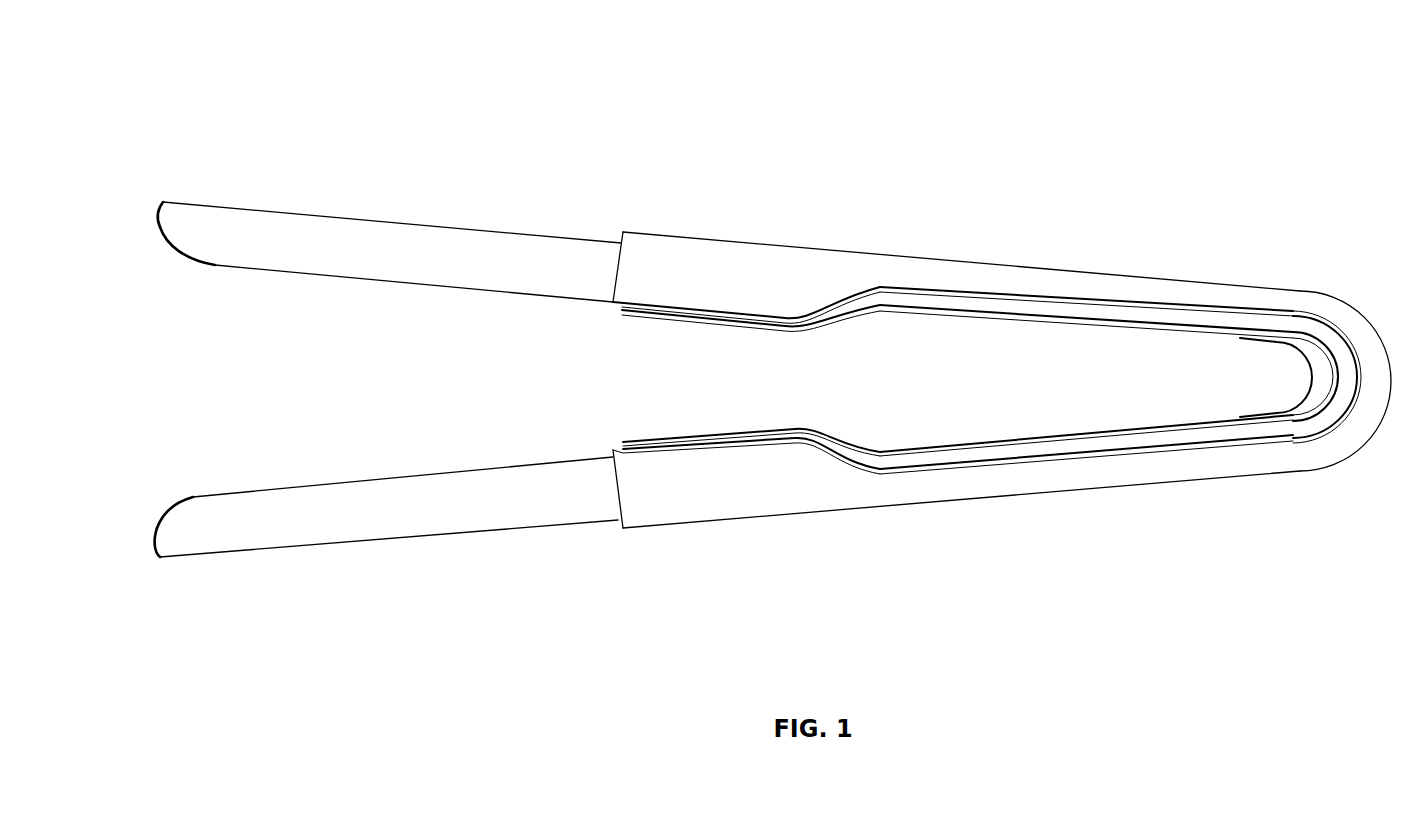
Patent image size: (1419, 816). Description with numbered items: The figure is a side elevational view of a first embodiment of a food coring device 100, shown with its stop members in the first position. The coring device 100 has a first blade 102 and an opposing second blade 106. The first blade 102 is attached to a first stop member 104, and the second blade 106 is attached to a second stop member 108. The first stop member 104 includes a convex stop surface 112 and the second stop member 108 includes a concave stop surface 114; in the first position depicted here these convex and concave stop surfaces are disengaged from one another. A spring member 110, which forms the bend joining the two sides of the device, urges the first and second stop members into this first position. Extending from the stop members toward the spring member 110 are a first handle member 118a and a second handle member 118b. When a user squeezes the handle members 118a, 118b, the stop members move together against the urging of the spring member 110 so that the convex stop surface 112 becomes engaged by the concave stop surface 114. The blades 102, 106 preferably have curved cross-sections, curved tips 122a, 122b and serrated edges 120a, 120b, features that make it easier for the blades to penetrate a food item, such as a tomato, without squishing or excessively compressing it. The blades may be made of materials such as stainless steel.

The food coring device 100 is at (178, 58).
The first blade 102 is at (340, 230).
The first stop member 104 is at (733, 258).
The second blade 106 is at (392, 540).
The second stop member 108 is at (732, 507).
The spring member 110 is at (1378, 370).
The convex stop surface 112 is at (795, 327).
The concave stop surface 114 is at (772, 432).
The first handle member 118a is at (1143, 283).
The second handle member 118b is at (1180, 470).
The serrated edge 120a is at (168, 245).
The serrated edge 120b is at (148, 556).
The curved tip 122a is at (159, 212).
The curved tip 122b is at (163, 520).